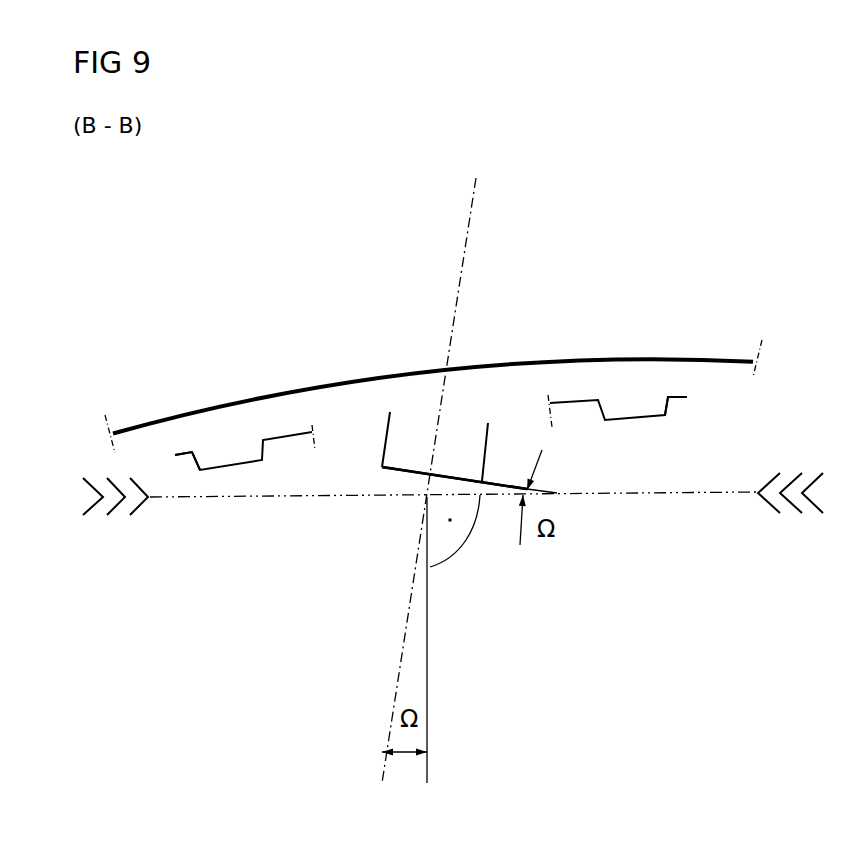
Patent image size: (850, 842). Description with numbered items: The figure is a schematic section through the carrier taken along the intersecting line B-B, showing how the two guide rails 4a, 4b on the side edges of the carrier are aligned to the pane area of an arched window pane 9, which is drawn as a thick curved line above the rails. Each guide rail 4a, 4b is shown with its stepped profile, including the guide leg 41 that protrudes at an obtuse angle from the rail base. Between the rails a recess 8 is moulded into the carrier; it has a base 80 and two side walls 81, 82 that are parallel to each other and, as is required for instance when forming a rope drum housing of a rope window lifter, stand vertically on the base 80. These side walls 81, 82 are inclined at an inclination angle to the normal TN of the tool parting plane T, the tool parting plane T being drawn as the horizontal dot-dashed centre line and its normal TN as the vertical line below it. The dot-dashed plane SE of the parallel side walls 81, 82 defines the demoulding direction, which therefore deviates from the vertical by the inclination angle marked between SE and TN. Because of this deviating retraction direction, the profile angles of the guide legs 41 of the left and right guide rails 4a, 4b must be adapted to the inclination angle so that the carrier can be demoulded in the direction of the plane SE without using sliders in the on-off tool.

The window pane 9 is at (730, 358).
The guide leg 41 is at (198, 467).
The guide rail 4a is at (232, 467).
The guide rail 4b is at (635, 418).
The recess 8 is at (408, 472).
The base of the recess 80 is at (442, 472).
The side wall 81 is at (387, 437).
The side wall 82 is at (485, 453).
The tool parting plane T is at (728, 493).
The normal of the tool parting plane TN is at (428, 625).
The plane of the parallel side walls SE is at (392, 672).